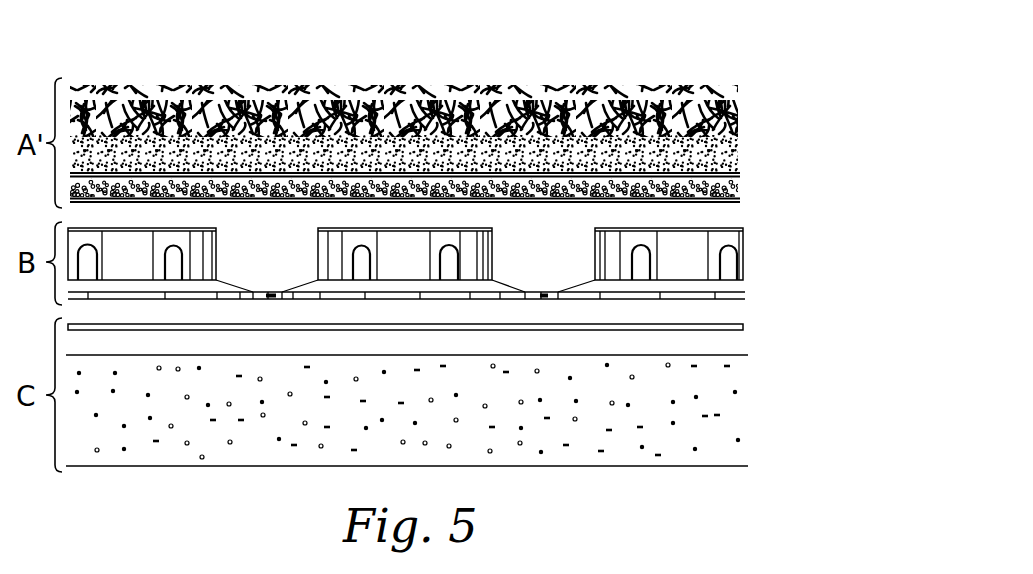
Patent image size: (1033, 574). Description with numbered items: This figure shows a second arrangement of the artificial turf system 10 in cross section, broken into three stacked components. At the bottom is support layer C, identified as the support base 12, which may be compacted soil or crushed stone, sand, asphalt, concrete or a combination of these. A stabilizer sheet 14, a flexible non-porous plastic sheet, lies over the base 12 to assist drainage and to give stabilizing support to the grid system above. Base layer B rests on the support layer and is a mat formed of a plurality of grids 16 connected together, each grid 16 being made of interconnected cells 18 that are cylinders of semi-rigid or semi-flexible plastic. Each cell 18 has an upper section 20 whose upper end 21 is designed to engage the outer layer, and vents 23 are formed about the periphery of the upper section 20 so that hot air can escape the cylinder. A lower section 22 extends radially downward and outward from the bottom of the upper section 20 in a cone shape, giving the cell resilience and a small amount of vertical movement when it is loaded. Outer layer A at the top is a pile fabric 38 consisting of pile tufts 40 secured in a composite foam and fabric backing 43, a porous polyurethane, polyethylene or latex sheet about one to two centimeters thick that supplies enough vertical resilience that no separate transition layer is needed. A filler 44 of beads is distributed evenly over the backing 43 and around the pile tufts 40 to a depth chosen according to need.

The artificial turf system 10 is at (548, 58).
The support base 12 is at (735, 408).
The stabilizer sheet 14 is at (745, 329).
The grid 16 is at (778, 261).
The cell 18 is at (217, 232).
The upper section 20 is at (595, 253).
The upper end 21 is at (720, 228).
The lower section 22 is at (217, 285).
The vent 23 is at (456, 264).
The pile fabric 38 is at (713, 70).
The pile tufts 40 is at (737, 108).
The composite foam and fabric sheet backing 43 is at (741, 190).
The filler 44 is at (739, 166).